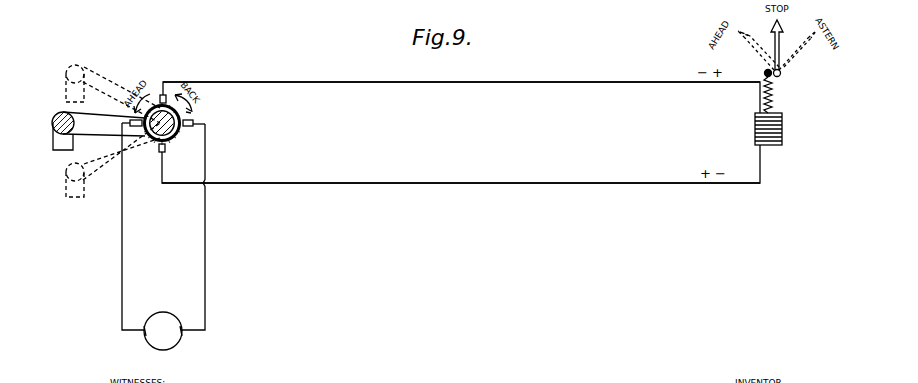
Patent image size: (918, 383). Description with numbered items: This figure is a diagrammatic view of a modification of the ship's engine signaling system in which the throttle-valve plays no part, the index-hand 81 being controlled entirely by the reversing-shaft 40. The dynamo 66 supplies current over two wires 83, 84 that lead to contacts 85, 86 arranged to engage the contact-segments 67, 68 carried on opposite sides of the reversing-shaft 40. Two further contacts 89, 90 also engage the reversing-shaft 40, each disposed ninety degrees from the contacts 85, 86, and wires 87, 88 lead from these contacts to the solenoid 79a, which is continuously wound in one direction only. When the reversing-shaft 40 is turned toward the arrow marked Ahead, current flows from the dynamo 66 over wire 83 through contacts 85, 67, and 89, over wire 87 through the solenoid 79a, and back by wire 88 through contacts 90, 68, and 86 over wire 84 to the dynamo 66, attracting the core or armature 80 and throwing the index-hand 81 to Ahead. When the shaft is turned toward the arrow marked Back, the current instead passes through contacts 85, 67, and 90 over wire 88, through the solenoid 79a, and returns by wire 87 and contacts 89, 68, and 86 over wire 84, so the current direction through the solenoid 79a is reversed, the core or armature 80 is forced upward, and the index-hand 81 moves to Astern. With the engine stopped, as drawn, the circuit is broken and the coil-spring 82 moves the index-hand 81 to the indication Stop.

The reversing-shaft 40 is at (178, 128).
The dynamo 66 is at (161, 314).
The contact-segment 67 is at (153, 135).
The contact-segment 68 is at (178, 114).
The solenoid 79a is at (783, 127).
The core or armature 80 is at (781, 73).
The index-hand 81 is at (775, 33).
The coil-spring 82 is at (773, 91).
The wire 83 is at (123, 204).
The wire 84 is at (206, 158).
The contact 85 is at (130, 122).
The contact 86 is at (191, 127).
The wire 87 is at (700, 82).
The wire 88 is at (191, 184).
The contact 89 is at (164, 94).
The contact 90 is at (160, 153).